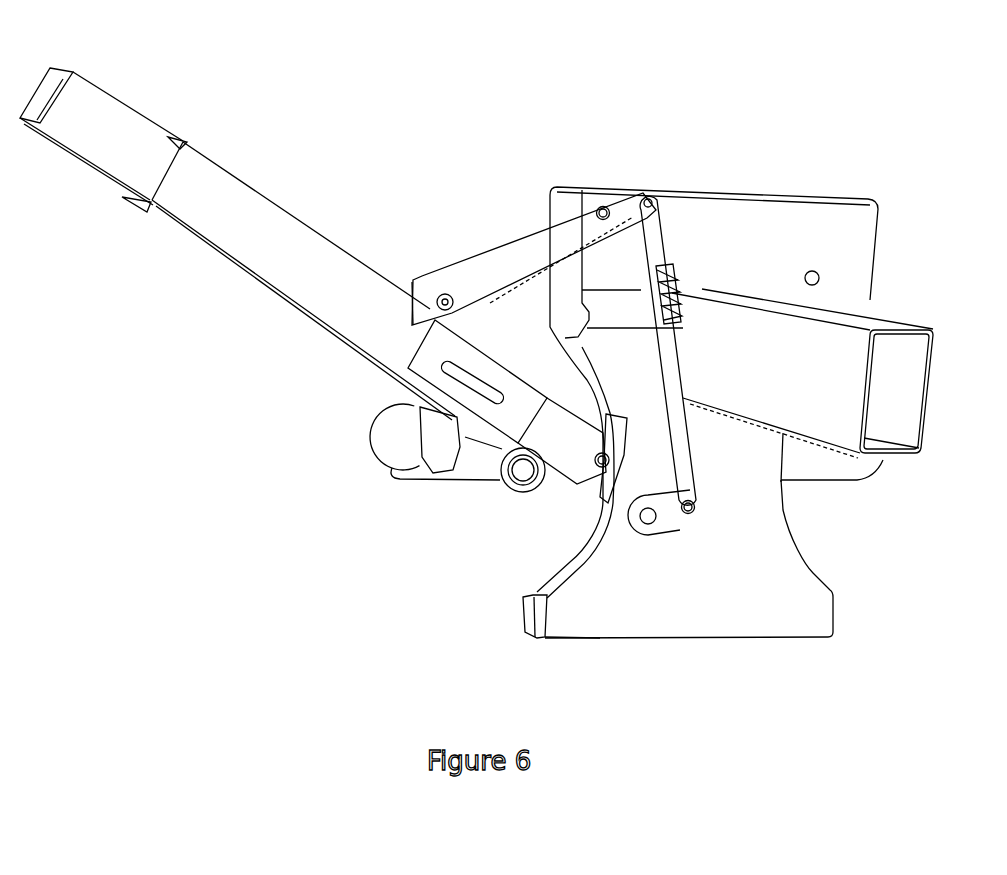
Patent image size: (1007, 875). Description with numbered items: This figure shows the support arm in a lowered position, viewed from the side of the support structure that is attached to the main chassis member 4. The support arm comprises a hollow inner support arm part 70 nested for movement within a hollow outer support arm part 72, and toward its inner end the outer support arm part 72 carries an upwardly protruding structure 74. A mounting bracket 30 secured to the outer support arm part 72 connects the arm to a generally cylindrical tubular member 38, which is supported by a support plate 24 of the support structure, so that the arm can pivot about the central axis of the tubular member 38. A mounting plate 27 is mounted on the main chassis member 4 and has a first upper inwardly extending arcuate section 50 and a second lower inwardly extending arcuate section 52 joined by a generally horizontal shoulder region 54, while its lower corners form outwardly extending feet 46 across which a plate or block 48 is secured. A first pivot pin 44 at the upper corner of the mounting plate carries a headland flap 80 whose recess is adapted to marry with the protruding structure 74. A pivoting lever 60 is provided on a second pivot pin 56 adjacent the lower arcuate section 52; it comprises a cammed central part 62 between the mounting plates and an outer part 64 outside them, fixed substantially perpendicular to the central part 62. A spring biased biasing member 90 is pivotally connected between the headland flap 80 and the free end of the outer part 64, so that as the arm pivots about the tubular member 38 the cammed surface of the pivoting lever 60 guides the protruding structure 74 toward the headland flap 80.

The main chassis member 4 is at (873, 323).
The support plate 24 is at (823, 465).
The mounting plate 27 is at (710, 613).
The mounting bracket 30 is at (492, 372).
The cylindrical tubular member 38 is at (483, 465).
The first pivot pin 44 is at (604, 209).
The outwardly extending feet 46 is at (561, 622).
The plate or block 48 is at (523, 622).
The first upper inwardly extending arcuate section 50 is at (592, 377).
The second lower inwardly extending arcuate section 52 is at (578, 568).
The shoulder region 54 is at (603, 411).
The second pivot pin 56 is at (651, 527).
The pivoting lever 60 is at (587, 495).
The central part 62 is at (614, 440).
The outer part 64 is at (667, 518).
The inner support arm part 70 is at (112, 128).
The outer support arm part 72 is at (220, 183).
The upwardly protruding structure 74 is at (438, 300).
The headland flap 80 is at (497, 267).
The biasing member 90 is at (654, 232).